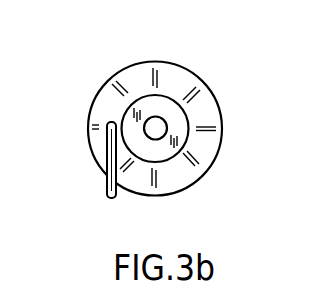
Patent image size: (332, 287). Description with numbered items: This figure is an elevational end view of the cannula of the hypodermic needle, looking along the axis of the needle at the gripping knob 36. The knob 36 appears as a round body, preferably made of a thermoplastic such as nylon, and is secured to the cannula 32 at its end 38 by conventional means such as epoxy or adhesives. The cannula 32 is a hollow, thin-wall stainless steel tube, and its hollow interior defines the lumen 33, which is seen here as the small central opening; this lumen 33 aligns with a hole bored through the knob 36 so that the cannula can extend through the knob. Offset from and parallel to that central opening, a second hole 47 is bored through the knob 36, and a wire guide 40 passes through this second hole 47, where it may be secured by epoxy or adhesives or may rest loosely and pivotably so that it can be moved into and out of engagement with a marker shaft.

The cannula 32 is at (216, 99).
The lumen 33 is at (160, 122).
The gripping knob 36 is at (179, 121).
The end 38 is at (198, 97).
The wire guide 40 is at (108, 192).
The second hole 47 is at (71, 158).